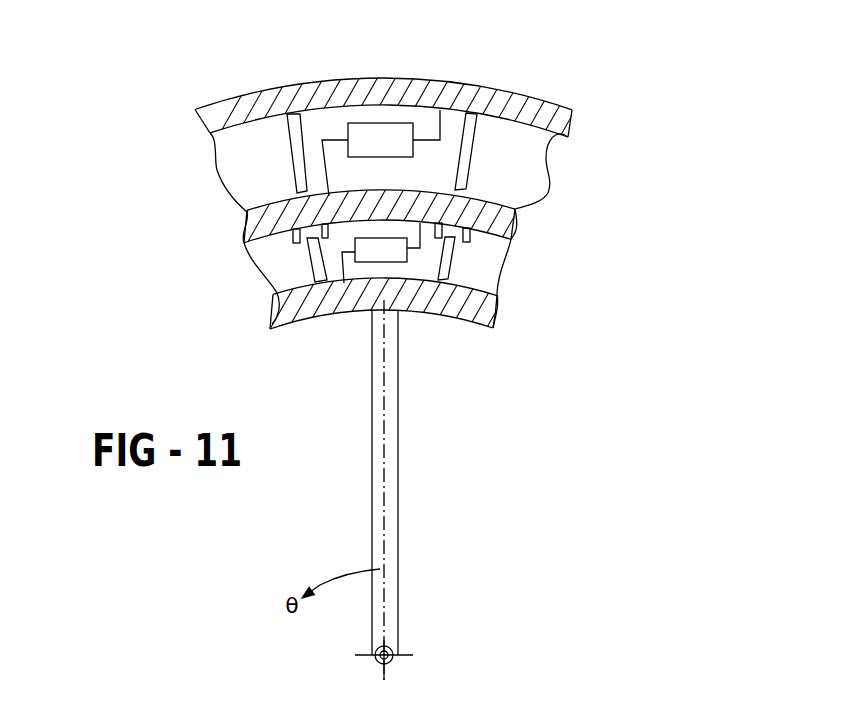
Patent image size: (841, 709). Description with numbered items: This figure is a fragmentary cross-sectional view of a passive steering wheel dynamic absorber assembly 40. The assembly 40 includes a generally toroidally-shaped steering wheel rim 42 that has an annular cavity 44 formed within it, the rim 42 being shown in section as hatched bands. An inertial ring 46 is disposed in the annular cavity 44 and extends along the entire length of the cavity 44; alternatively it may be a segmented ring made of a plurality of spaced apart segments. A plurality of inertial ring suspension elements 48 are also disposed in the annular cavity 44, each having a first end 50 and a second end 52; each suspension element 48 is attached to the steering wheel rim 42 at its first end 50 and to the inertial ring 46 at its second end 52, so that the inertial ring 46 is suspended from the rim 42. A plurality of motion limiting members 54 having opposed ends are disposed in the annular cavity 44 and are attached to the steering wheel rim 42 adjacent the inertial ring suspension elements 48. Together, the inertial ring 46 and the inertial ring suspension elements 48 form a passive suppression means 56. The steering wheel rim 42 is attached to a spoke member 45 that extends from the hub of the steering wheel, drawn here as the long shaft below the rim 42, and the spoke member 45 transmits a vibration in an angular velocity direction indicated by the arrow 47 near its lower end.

The passive steering wheel dynamic absorber assembly 40 is at (140, 98).
The steering wheel rim 42 is at (497, 98).
The annular cavity 44 is at (258, 193).
The spoke member 45 is at (390, 533).
The inertial ring 46 is at (248, 275).
The arrow 47 is at (343, 583).
The inertial ring suspension elements 48 is at (369, 112).
The first end 50 is at (415, 132).
The second end 52 is at (348, 133).
The motion limiting members 54 is at (290, 142).
The passive suppression means 56 is at (592, 255).